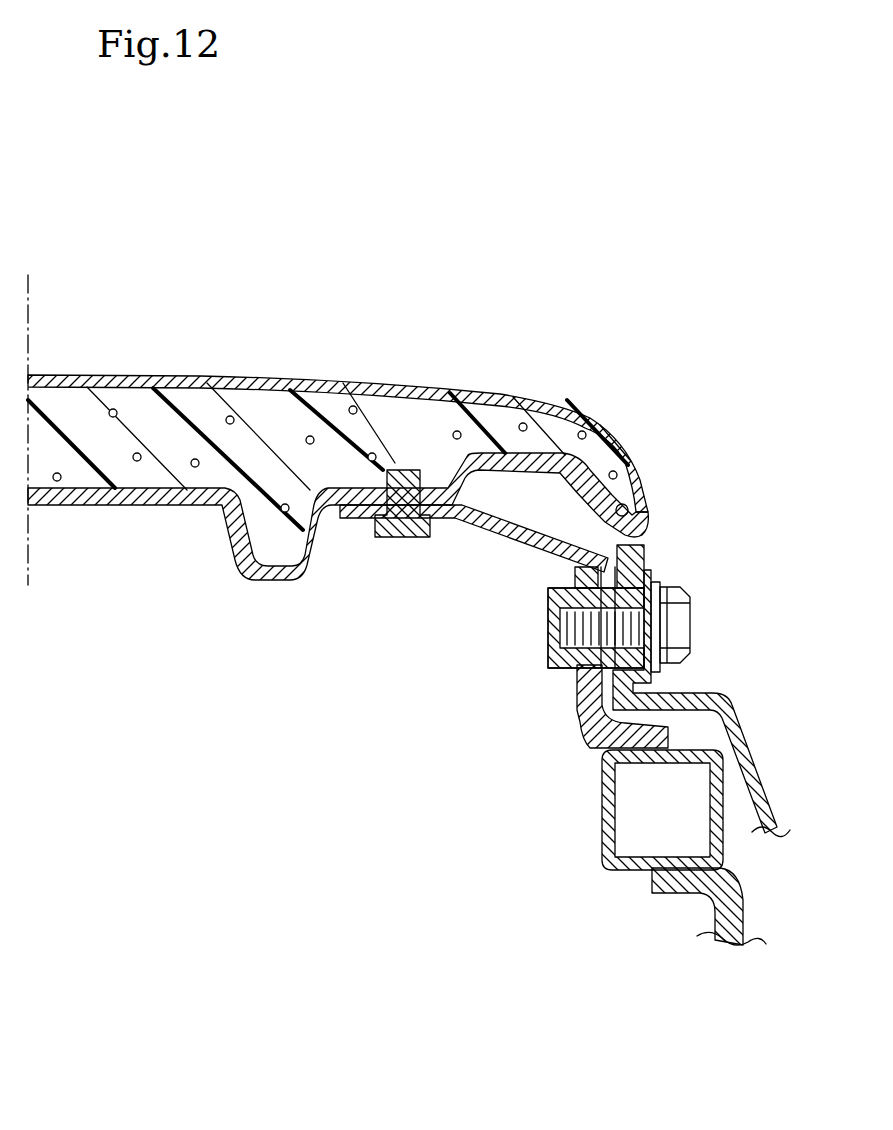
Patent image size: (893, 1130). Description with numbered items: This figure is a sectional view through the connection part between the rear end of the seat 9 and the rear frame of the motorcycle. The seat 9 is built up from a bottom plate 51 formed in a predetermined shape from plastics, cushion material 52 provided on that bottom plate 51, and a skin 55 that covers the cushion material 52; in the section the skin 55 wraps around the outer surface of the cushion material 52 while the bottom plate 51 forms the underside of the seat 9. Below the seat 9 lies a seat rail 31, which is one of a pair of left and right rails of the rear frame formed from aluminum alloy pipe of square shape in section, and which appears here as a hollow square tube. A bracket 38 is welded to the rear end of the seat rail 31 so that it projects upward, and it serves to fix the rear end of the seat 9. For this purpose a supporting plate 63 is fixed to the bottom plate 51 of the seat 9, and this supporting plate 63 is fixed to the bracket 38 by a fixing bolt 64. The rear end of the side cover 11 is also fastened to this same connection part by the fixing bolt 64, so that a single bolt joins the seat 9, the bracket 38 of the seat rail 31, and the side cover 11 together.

The seat 9 is at (392, 415).
The cushion material 52 is at (195, 398).
The skin 55 is at (323, 382).
The bottom plate 51 is at (652, 513).
The supporting plate 63 is at (493, 526).
The fixing bolt 64 is at (690, 627).
The bracket 38 is at (577, 697).
The side cover 11 is at (750, 758).
The seat rail 31 is at (602, 837).